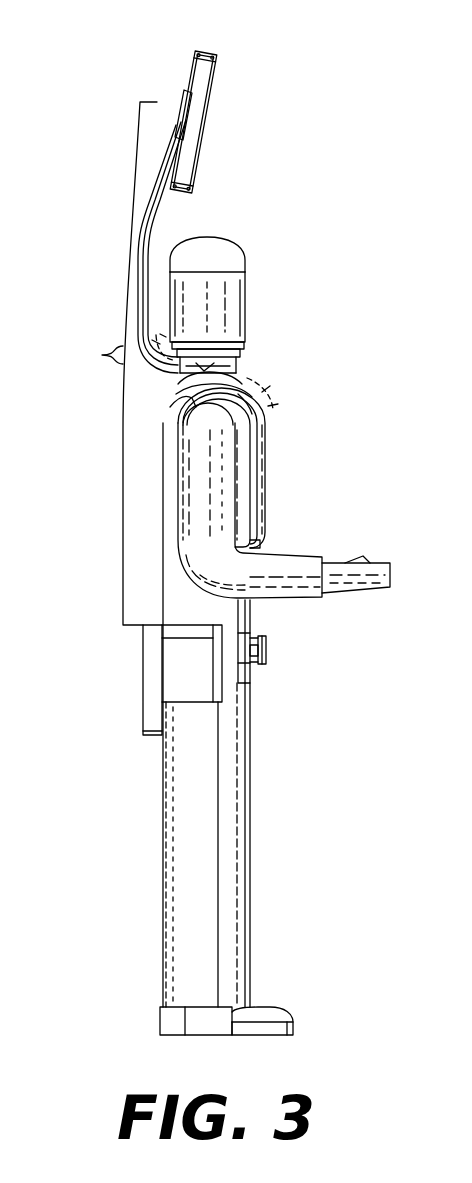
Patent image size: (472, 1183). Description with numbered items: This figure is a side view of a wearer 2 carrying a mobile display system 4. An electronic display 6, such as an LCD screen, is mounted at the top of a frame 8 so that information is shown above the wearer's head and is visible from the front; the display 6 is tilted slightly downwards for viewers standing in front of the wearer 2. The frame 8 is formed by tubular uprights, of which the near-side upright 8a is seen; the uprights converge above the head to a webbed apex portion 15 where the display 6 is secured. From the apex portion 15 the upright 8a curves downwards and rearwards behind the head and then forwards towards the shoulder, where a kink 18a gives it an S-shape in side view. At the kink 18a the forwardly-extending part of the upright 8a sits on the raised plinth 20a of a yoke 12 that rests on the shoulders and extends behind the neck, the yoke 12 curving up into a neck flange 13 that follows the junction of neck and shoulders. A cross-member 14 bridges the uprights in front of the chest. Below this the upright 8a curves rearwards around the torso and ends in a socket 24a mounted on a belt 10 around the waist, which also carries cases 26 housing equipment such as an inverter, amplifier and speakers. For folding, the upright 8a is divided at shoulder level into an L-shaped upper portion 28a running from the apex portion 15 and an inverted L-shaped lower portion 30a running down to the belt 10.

The wearer 2 is at (318, 265).
The mobile display system 4 is at (116, 127).
The electronic display 6 is at (198, 107).
The frame 8 is at (102, 355).
The tubular upright 8a is at (257, 385).
The belt 10 is at (230, 650).
The yoke 12 is at (165, 391).
The neck flange 13 is at (220, 368).
The cross-member 14 is at (163, 147).
The apex portion 15 is at (176, 117).
The kink 18a is at (163, 352).
The raised plinth 20a is at (193, 399).
The socket 24a is at (242, 665).
The case 26 is at (182, 688).
The upper portion 28a is at (150, 238).
The lower portion 30a is at (270, 495).